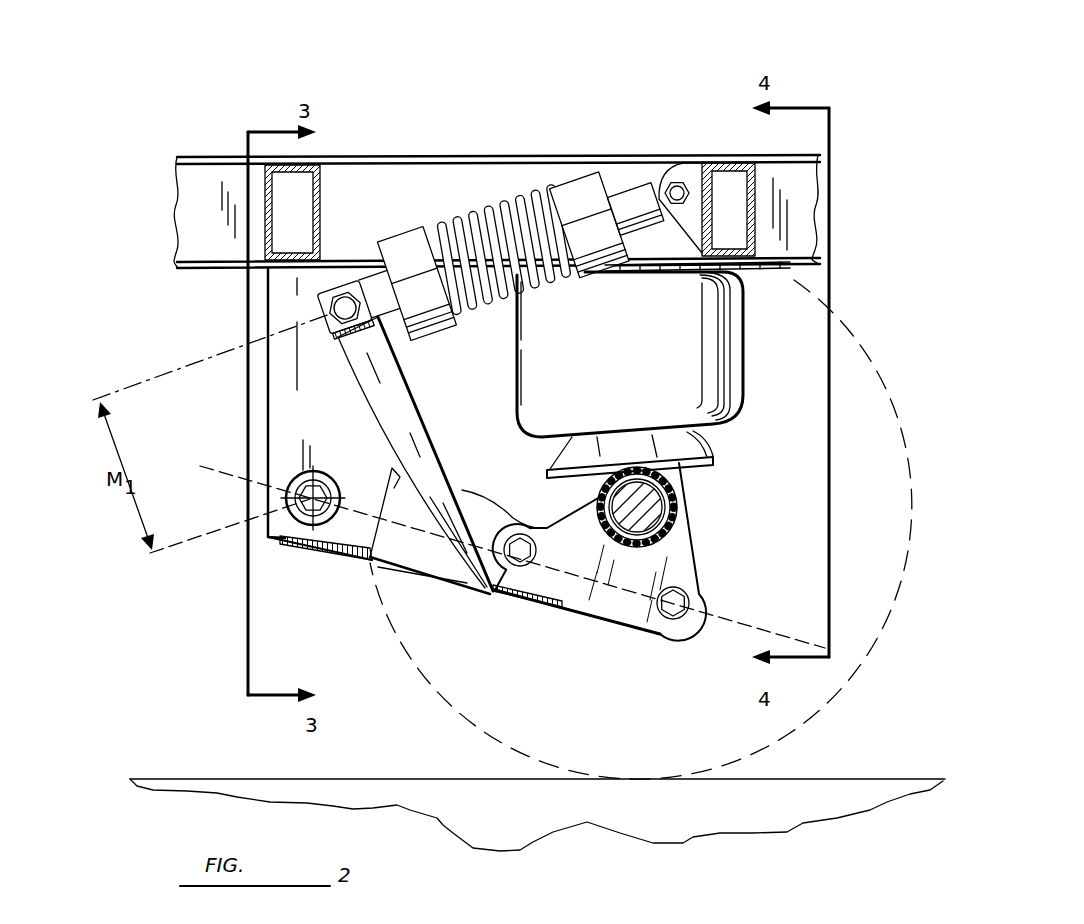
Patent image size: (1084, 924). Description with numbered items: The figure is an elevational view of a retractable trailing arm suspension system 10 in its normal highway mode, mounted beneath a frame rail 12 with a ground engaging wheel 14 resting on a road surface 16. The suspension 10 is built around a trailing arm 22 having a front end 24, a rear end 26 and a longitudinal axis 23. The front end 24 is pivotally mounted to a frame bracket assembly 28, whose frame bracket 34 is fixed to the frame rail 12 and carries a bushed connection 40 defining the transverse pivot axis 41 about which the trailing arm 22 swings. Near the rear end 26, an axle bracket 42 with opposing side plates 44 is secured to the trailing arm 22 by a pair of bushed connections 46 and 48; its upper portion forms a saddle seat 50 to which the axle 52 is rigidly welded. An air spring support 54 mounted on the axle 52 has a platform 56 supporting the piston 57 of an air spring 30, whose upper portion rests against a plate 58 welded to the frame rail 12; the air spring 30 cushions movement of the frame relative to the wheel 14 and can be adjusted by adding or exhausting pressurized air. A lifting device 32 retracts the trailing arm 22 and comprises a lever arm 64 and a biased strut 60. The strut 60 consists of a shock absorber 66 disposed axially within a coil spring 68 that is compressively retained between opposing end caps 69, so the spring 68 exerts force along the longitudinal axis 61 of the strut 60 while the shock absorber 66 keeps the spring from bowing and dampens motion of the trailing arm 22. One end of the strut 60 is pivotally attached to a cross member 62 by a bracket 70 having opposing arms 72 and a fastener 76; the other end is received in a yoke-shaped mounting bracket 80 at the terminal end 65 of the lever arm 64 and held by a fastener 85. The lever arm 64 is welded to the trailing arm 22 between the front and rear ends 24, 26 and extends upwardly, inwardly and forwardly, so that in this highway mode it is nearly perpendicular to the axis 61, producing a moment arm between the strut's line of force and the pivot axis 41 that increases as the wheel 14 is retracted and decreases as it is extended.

The trailing arm suspension system 10 is at (118, 277).
The frame rail 12 is at (318, 142).
The ground engaging wheel 14 is at (840, 266).
The road surface 16 is at (826, 778).
The trailing arm 22 is at (480, 490).
The longitudinal axis of the trailing arm 23 is at (227, 478).
The front end 24 is at (304, 552).
The rear end 26 is at (615, 628).
The frame bracket assembly 28 is at (233, 459).
The air spring 30 is at (755, 350).
The lifting device 32 is at (474, 229).
The frame bracket 34 is at (260, 423).
The bushed connection 40 is at (322, 473).
The pivot axis 41 is at (340, 554).
The axle bracket 42 is at (714, 577).
The side plates 44 is at (609, 626).
The bushed connection 46 is at (518, 572).
The bushed connection 48 is at (695, 608).
The axle seat 50 is at (670, 542).
The axle 52 is at (680, 528).
The air spring support 54 is at (702, 486).
The platform 56 is at (607, 447).
The piston 57 is at (700, 447).
The plate 58 is at (728, 270).
The biased strut 60 is at (508, 188).
The longitudinal axis of the strut 61 is at (233, 350).
The cross member 62 is at (322, 200).
The lever arm 64 is at (434, 449).
The terminal end 65 is at (306, 303).
The shock absorber 66 is at (514, 278).
The coil spring 68 is at (607, 170).
The end caps 69 is at (516, 222).
The bracket 70 is at (691, 150).
The bracket arms 72 is at (690, 212).
The fastener 76 is at (683, 186).
The mounting bracket 80 is at (333, 320).
The fastener 85 is at (329, 298).